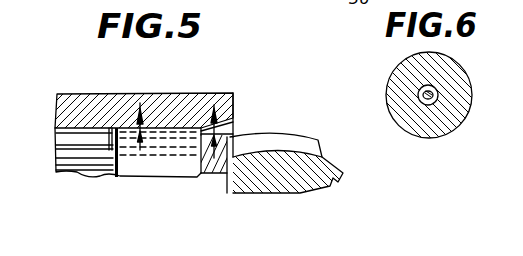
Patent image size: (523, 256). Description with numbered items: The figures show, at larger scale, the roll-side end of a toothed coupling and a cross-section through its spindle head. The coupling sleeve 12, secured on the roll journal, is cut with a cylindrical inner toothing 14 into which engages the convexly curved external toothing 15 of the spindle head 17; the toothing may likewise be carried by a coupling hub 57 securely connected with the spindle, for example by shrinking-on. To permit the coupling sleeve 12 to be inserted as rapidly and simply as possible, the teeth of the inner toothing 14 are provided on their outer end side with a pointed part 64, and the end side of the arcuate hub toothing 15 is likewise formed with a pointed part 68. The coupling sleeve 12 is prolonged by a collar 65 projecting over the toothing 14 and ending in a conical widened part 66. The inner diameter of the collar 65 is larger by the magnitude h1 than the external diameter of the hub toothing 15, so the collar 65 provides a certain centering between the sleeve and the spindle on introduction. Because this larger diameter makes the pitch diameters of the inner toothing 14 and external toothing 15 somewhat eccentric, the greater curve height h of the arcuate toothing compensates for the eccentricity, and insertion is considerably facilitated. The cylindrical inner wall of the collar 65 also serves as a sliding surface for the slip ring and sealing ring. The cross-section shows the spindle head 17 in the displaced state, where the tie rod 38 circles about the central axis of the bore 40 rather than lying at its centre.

In FIG. 5, the coupling sleeve 12 is at (58, 103).
In FIG. 5, the cylindrical inner toothing 14 is at (62, 139).
In FIG. 5, the pointed part 64 is at (110, 165).
In FIG. 5, the collar 65 is at (163, 105).
In FIG. 5, the conical widened part 66 is at (232, 93).
In FIG. 5, the curve height h is at (233, 125).
In FIG. 5, the diameter difference magnitude h1 is at (146, 130).
In FIG. 5, the pointed part 68 is at (227, 193).
In FIG. 5, the convexly curved external toothing 15 is at (319, 140).
In FIG. 5, the coupling hub 57 is at (290, 178).
In FIG. 6, the spindle head 17 is at (457, 115).
In FIG. 6, the bore 40 is at (437, 89).
In FIG. 6, the shaft 38 is at (425, 105).